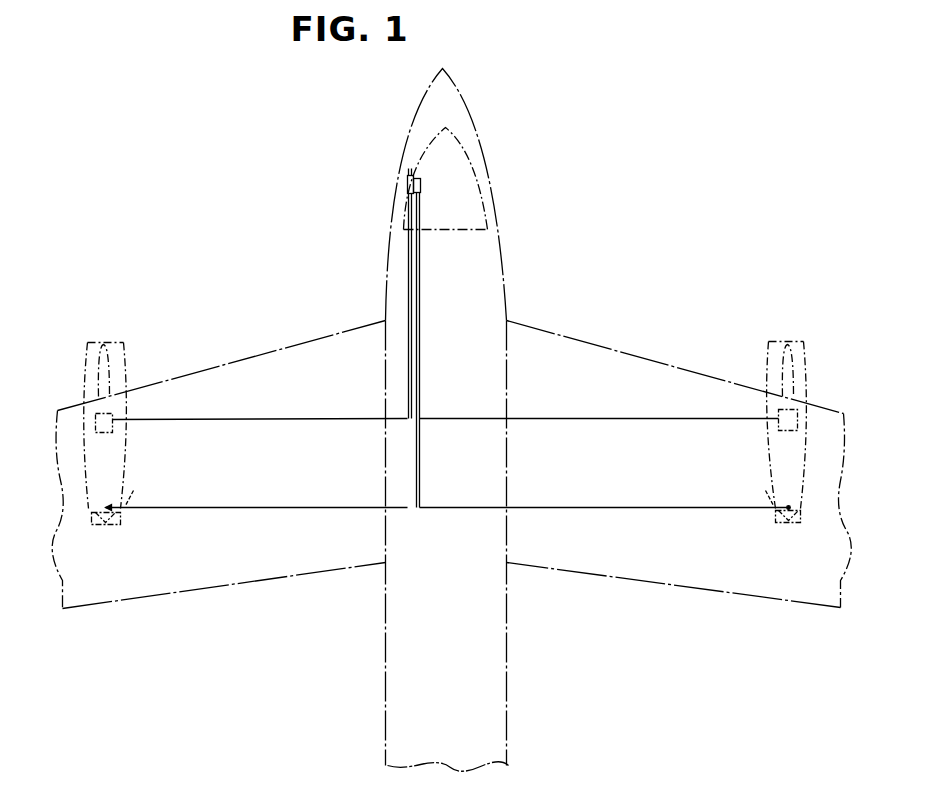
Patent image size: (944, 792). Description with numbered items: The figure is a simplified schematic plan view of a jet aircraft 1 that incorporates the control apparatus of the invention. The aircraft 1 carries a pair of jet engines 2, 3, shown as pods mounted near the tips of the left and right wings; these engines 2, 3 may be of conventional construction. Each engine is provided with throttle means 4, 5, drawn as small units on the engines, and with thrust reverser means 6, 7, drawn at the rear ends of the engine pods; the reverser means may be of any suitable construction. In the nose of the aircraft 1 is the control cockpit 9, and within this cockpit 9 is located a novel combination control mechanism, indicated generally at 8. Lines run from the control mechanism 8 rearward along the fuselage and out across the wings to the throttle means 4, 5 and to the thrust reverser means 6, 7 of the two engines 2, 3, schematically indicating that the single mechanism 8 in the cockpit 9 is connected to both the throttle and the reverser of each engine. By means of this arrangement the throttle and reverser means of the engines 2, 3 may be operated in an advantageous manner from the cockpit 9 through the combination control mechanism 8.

The jet aircraft 1 is at (508, 652).
The jet engine 2 is at (125, 350).
The jet engine 3 is at (766, 353).
The throttle means 4 is at (112, 415).
The throttle means 5 is at (778, 412).
The thrust reverser means 6 is at (88, 499).
The thrust reverser means 7 is at (805, 499).
The combination control mechanism 8 is at (422, 183).
The control cockpit 9 is at (452, 136).